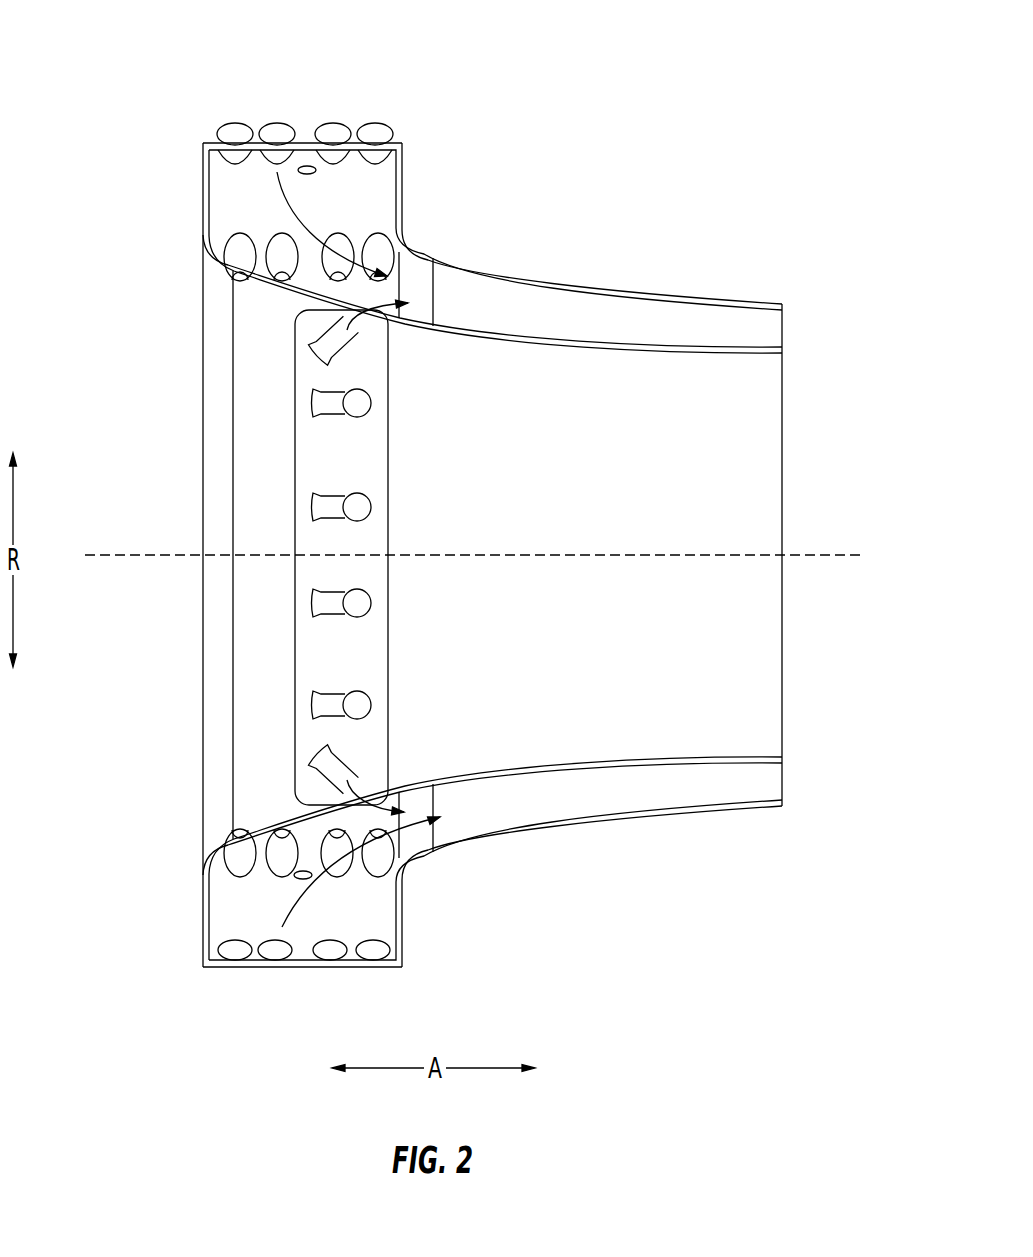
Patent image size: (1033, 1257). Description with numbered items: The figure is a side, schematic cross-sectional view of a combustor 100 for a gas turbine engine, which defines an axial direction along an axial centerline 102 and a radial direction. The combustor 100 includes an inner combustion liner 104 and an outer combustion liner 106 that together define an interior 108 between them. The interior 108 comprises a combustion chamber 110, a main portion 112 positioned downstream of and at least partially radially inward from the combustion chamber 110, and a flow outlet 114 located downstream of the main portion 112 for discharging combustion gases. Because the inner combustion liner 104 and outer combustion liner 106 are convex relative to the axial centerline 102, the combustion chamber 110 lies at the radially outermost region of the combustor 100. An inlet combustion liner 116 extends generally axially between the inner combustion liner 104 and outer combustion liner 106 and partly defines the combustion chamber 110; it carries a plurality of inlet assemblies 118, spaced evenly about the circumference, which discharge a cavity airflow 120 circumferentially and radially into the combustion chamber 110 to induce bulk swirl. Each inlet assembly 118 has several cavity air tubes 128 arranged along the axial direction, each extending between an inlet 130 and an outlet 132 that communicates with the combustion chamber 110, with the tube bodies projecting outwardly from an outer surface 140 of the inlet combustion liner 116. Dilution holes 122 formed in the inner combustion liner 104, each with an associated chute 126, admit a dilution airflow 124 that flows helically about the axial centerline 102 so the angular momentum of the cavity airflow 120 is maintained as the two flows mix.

The combustor 100 is at (698, 80).
The axial centerline 102 is at (815, 553).
The inner combustion liner 104 is at (532, 350).
The outer combustion liner 106 is at (520, 280).
The interior 108 is at (405, 277).
The combustion chamber 110 is at (373, 190).
The main portion 112 is at (531, 312).
The flow outlet 114 is at (790, 334).
The inlet combustion liner 116 is at (302, 143).
The inlet assembly 118 is at (222, 112).
The cavity airflow 120 is at (290, 213).
The dilution holes 122 is at (363, 325).
The dilution airflow 124 is at (383, 322).
The chute 126 is at (350, 587).
The cavity air tubes 128 is at (272, 143).
The inlet 130 is at (235, 120).
The outlet 132 is at (233, 160).
The outer surface 140 is at (300, 975).